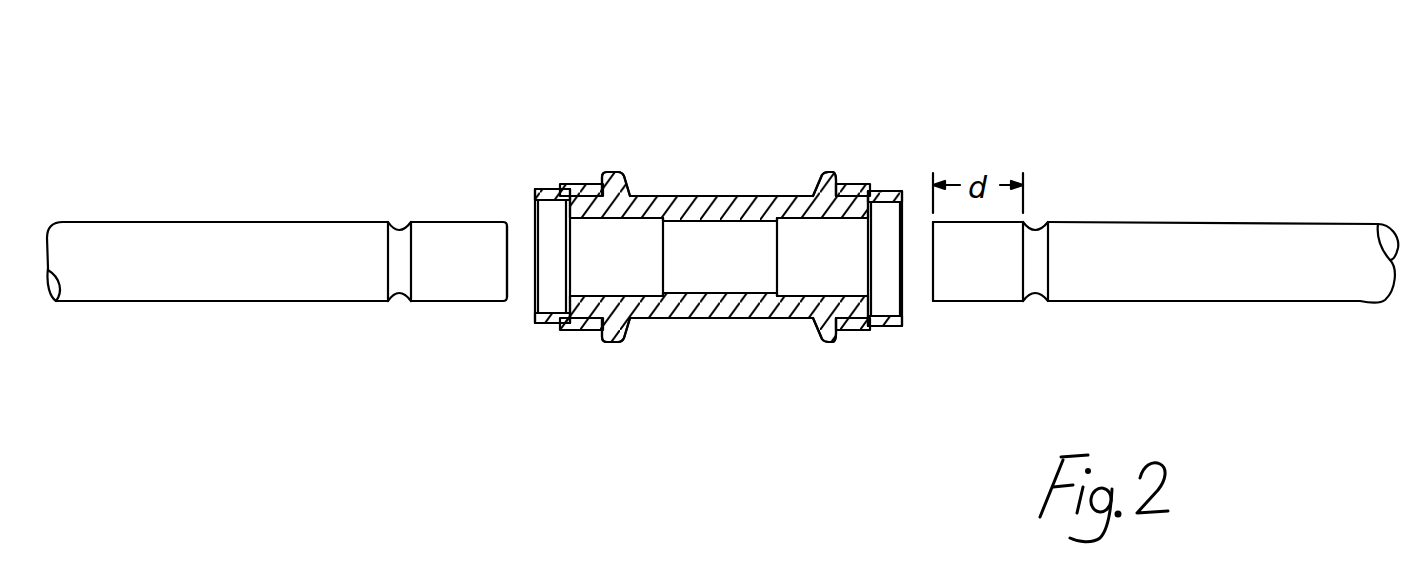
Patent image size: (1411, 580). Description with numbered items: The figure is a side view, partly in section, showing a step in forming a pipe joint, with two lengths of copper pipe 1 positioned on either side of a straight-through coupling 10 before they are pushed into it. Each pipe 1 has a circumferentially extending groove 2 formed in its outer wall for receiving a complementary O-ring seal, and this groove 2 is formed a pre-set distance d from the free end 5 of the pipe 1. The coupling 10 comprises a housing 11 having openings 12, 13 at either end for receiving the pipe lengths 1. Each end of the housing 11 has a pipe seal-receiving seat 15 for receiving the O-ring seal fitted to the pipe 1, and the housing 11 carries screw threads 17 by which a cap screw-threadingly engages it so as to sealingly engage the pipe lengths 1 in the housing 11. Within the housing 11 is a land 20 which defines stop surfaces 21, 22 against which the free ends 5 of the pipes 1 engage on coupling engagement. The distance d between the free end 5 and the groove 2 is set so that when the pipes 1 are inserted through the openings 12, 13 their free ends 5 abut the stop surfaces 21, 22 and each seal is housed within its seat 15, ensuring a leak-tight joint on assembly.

The copper pipe 1 is at (237, 222).
The circumferentially extending groove 2 is at (403, 222).
The free end 5 is at (507, 301).
The straight-through coupling 10 is at (772, 83).
The housing 11 is at (665, 195).
The opening 12 is at (553, 266).
The opening 13 is at (886, 268).
The pipe seal-receiving seat 15 is at (553, 216).
The screw threads 17 is at (578, 195).
The land 20 is at (720, 297).
The stop surface 21 is at (778, 318).
The stop surface 22 is at (667, 297).